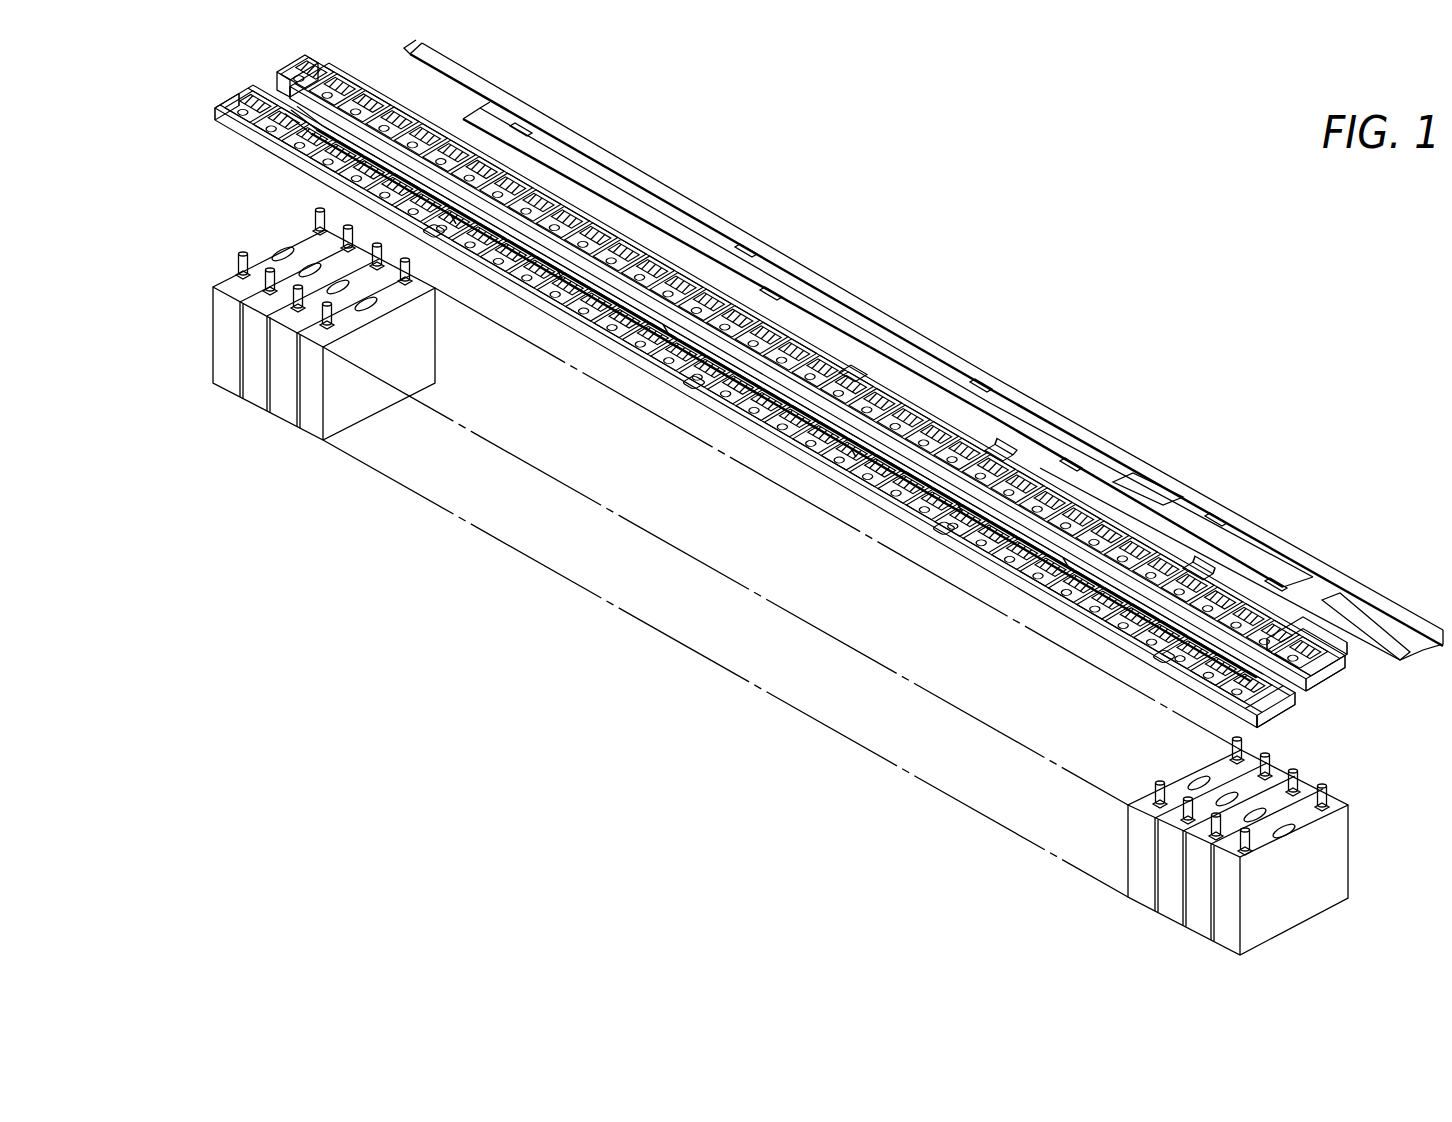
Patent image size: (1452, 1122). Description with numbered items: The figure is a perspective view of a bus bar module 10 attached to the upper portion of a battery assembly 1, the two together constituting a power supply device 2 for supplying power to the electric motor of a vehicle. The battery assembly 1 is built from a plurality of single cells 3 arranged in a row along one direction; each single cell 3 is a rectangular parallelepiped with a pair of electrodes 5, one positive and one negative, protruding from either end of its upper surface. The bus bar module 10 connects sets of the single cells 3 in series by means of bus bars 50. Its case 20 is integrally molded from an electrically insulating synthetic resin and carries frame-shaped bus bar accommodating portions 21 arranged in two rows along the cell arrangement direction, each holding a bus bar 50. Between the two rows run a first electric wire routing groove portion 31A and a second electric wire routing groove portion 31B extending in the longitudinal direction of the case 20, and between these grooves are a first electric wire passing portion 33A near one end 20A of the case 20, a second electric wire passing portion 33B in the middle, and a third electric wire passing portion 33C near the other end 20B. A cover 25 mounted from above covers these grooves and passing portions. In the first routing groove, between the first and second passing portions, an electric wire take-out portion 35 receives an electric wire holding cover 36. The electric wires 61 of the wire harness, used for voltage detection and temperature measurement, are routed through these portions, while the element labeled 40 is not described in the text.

The battery assembly 1 is at (745, 683).
The power supply device 2 is at (633, 626).
The single cell 3 is at (218, 365).
The electrode 5 is at (240, 262).
The bus bar module 10 is at (782, 397).
The case 20 is at (835, 354).
The one end of the case 20A is at (232, 98).
The other end of the case 20B is at (1290, 688).
The bus bar accommodating portion 21 is at (235, 130).
The cover 25 is at (1077, 435).
The first electric wire routing groove portion 31A is at (687, 345).
The second electric wire routing groove portion 31B is at (725, 330).
The first electric wire passing portion 33A is at (445, 110).
The second electric wire passing portion 33B is at (997, 457).
The third electric wire passing portion 33C is at (1200, 600).
The electric wire take-out portion 35 is at (502, 240).
The electric wire holding cover 36 is at (517, 180).
The end cover 40 is at (290, 68).
The bus bar 50 is at (300, 150).
The electric wire 61 is at (545, 185).